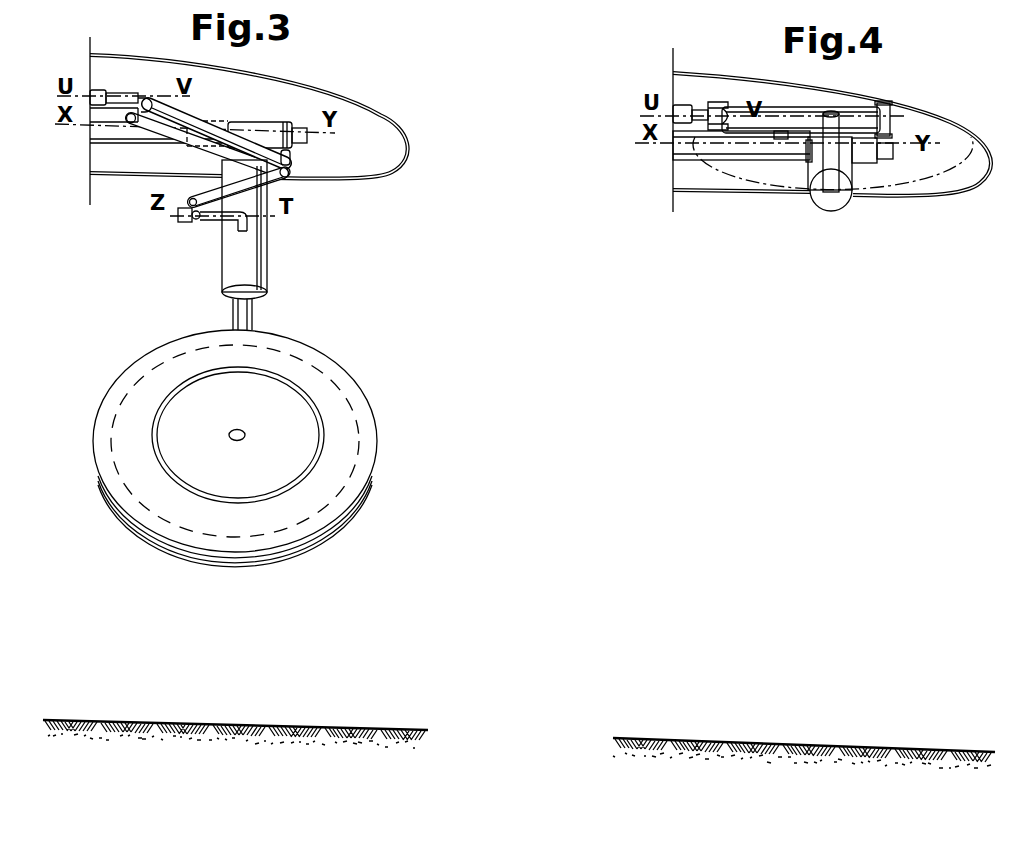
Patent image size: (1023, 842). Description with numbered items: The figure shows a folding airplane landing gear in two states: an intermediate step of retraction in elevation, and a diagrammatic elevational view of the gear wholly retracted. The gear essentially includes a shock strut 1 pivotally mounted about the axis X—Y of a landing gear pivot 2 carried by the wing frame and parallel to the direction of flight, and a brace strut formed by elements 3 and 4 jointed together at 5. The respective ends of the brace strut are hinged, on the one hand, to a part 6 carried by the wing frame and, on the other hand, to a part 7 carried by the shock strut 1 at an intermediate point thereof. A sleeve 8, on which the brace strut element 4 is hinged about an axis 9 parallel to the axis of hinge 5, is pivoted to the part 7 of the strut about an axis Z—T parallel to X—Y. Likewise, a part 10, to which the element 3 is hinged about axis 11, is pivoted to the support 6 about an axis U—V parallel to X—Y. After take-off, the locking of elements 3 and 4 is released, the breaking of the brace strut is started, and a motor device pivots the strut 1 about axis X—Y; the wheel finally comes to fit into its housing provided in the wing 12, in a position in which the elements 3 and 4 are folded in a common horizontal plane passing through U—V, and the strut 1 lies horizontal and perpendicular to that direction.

In FIG. 3, the shock strut 1 is at (262, 257).
In FIG. 4, the shock strut 1 is at (856, 172).
In FIG. 3, the landing gear pivot 2 is at (253, 122).
In FIG. 4, the landing gear pivot 2 is at (794, 152).
In FIG. 3, the brace strut element 3 is at (200, 147).
In FIG. 4, the brace strut element 3 is at (819, 108).
In FIG. 3, the brace strut element 4 is at (208, 194).
In FIG. 4, the brace strut element 4 is at (813, 150).
In FIG. 3, the hinge 5 is at (291, 170).
In FIG. 4, the hinge 5 is at (890, 102).
In FIG. 3, the part carried by the wing frame 6 is at (97, 89).
In FIG. 4, the part carried by the wing frame 6 is at (681, 105).
In FIG. 3, the part carried by the shock strut 7 is at (216, 224).
In FIG. 3, the sleeve 8 is at (183, 223).
In FIG. 3, the axis 9 is at (193, 221).
In FIG. 4, the axis 9 is at (785, 131).
In FIG. 3, the part 10 is at (121, 92).
In FIG. 4, the part 10 is at (699, 109).
In FIG. 3, the axis 11 is at (127, 121).
In FIG. 4, the axis 11 is at (714, 101).
In FIG. 3, the wing 12 is at (313, 83).
In FIG. 4, the wing 12 is at (932, 112).